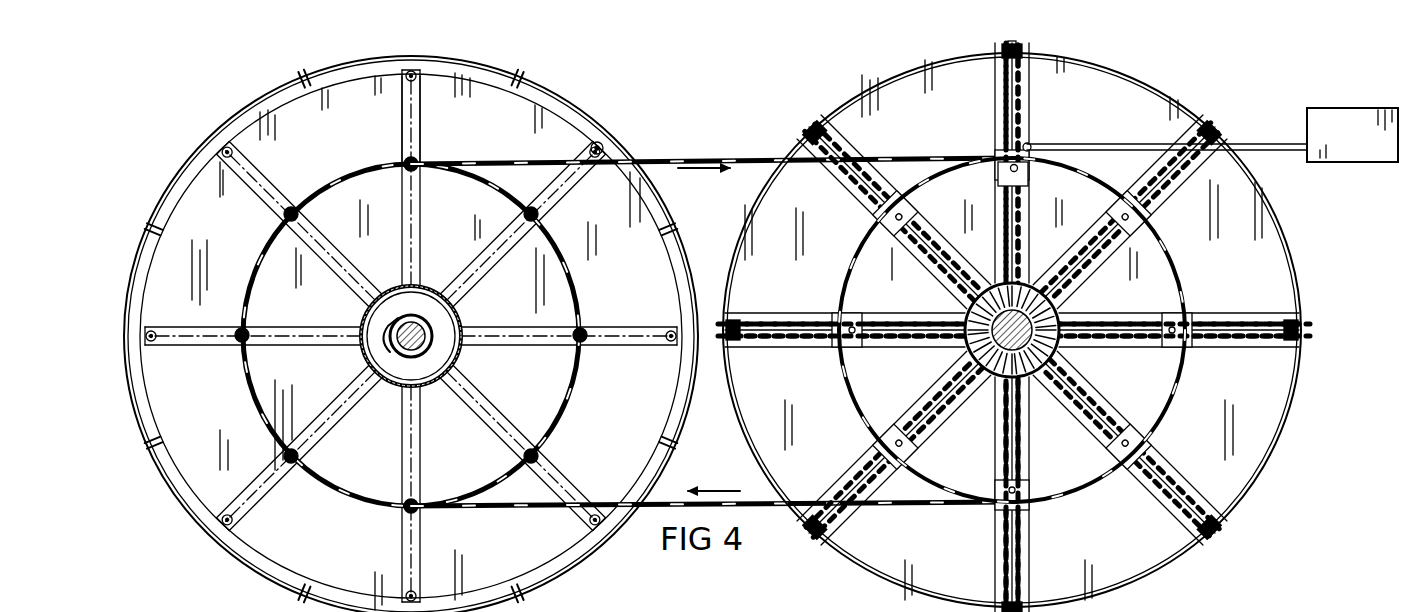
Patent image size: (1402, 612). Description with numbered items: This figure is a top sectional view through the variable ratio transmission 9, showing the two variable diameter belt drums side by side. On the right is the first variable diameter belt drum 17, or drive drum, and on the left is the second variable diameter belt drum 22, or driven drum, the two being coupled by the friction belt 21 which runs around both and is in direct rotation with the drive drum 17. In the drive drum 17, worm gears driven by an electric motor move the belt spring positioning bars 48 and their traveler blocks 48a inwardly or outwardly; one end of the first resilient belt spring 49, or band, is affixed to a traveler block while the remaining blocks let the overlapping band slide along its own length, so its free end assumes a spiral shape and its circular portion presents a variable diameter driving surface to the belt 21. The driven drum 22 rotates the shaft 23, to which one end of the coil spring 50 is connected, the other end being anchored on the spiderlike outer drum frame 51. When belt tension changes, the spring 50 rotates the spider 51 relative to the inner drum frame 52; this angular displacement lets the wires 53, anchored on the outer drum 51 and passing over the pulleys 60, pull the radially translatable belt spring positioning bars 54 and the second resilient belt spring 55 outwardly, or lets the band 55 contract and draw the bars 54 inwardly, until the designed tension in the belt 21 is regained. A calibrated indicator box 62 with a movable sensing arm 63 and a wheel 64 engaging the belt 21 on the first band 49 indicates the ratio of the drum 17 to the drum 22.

The variable ratio transmission 9 is at (1225, 92).
The first variable diameter belt drum 17 is at (1305, 255).
The friction belt 21 is at (725, 155).
The second variable diameter belt drum 22 is at (228, 112).
The shaft 23 is at (407, 314).
The belt spring positioning bars 48 is at (1003, 165).
The traveler blocks 48a is at (1024, 174).
The first resilient belt spring 49 is at (945, 371).
The coil spring 50 is at (367, 324).
The spiderlike outer drum frame 51 is at (240, 561).
The inner drum frame 52 is at (428, 127).
The wires 53 is at (400, 98).
The radially translatable belt spring positioning bars 54 is at (522, 212).
The second resilient belt spring 55 is at (312, 333).
The pulleys 60 is at (602, 142).
The calibrated indicator box 62 is at (1340, 110).
The movable sensing arm 63 is at (1117, 147).
The wheel 64 is at (1030, 145).